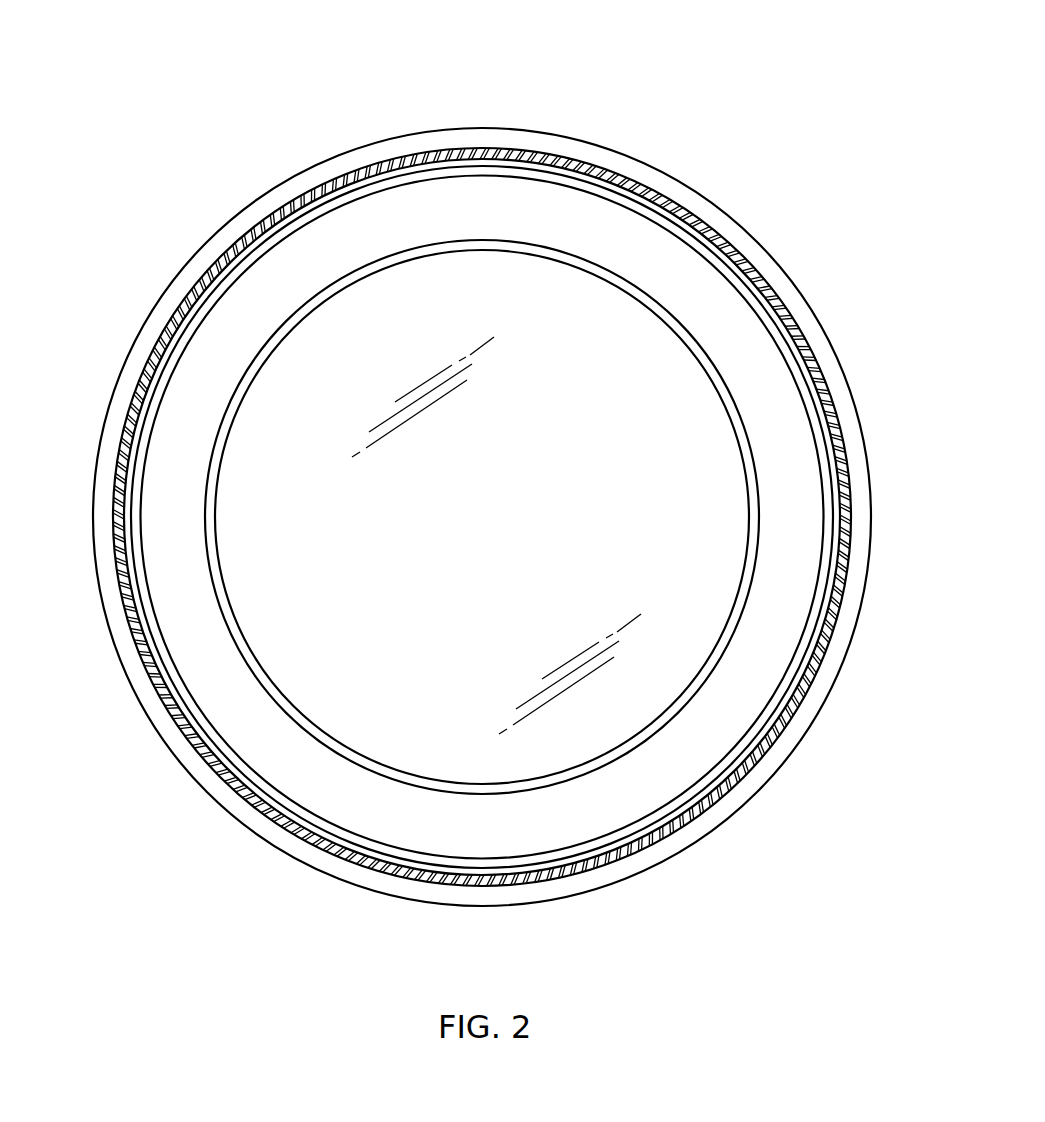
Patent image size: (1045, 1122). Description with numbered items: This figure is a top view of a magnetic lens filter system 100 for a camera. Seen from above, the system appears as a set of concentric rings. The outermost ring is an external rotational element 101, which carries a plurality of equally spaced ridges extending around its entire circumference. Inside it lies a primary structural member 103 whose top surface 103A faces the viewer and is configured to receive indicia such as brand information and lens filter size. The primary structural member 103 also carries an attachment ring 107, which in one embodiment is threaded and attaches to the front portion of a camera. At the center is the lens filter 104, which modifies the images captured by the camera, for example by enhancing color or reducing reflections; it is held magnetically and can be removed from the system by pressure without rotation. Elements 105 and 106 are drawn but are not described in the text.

The magnetic lens filter system 100 is at (166, 113).
The external rotational element 101 is at (841, 422).
The primary structural member 103 is at (346, 214).
The top surface 103A is at (505, 213).
The lens filter 104 is at (486, 479).
The seal ring 105 is at (517, 134).
The outer rim 106 is at (744, 227).
The attachment ring 107 is at (206, 434).